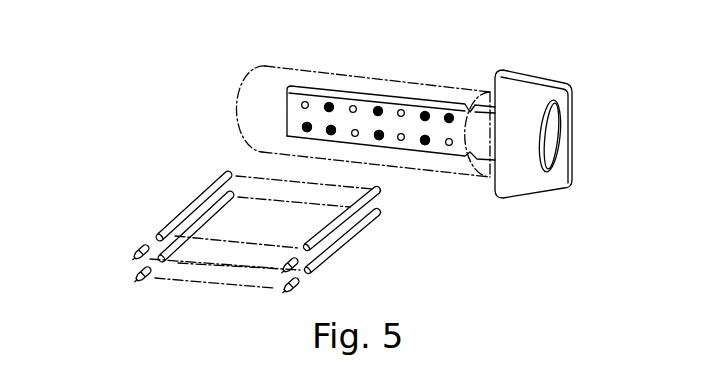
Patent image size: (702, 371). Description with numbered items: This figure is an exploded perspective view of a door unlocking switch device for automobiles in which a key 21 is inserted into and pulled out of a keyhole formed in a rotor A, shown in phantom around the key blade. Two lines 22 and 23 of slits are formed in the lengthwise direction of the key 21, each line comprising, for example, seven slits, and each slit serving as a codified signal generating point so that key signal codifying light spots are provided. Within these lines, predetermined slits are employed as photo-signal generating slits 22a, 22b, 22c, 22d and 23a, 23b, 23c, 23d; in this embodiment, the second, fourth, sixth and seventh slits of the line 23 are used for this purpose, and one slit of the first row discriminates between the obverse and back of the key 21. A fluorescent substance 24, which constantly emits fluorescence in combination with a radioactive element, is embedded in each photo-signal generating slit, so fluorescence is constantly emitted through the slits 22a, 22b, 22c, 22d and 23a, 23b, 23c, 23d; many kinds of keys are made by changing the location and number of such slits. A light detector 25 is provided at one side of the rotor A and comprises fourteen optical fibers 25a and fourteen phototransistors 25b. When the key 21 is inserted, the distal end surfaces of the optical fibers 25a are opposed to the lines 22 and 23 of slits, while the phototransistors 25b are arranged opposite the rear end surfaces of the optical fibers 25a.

The rotor A is at (265, 65).
The key 21 is at (541, 71).
The line of slits 22 is at (287, 103).
The photo-signal generating slit 22a is at (329, 104).
The photo-signal generating slit 22b is at (378, 108).
The photo-signal generating slit 22c is at (425, 113).
The photo-signal generating slit 22d is at (449, 115).
The line of slits 23 is at (287, 136).
The photo-signal generating slit 23a is at (306, 129).
The photo-signal generating slit 23b is at (331, 133).
The photo-signal generating slit 23c is at (380, 138).
The photo-signal generating slit 23d is at (427, 143).
The fluorescent substance 24 is at (330, 132).
The light detector 25 is at (362, 243).
The optical fiber 25a is at (187, 207).
The phototransistor 25b is at (133, 253).